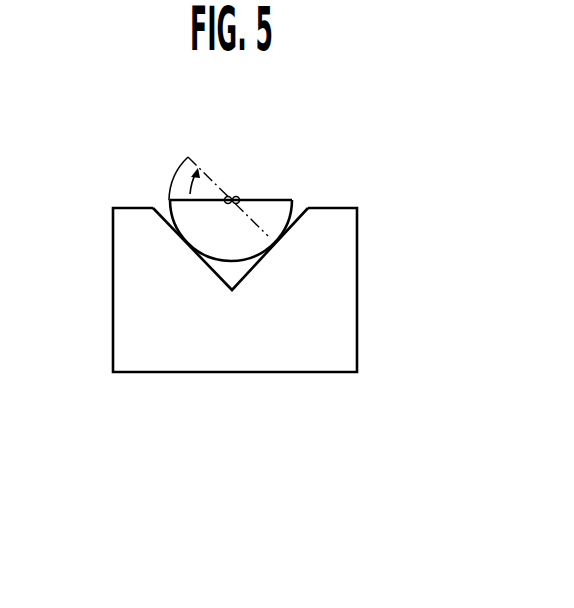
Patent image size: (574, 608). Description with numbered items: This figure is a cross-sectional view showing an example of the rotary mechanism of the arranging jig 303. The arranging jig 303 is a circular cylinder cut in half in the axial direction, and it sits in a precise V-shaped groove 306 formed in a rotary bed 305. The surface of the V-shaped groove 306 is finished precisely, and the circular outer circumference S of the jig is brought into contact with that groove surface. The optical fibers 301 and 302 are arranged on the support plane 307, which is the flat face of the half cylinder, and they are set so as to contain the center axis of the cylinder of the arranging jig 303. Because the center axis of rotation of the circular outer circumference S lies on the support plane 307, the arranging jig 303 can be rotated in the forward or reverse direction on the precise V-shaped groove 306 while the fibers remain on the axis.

The optical fiber 301 is at (230, 197).
The optical fiber 302 is at (240, 197).
The arranging jig 303 is at (274, 211).
The rotary bed 305 is at (333, 300).
The V-shaped groove 306 is at (243, 268).
The support plane 307 is at (250, 197).
The circular outer circumference S is at (226, 265).